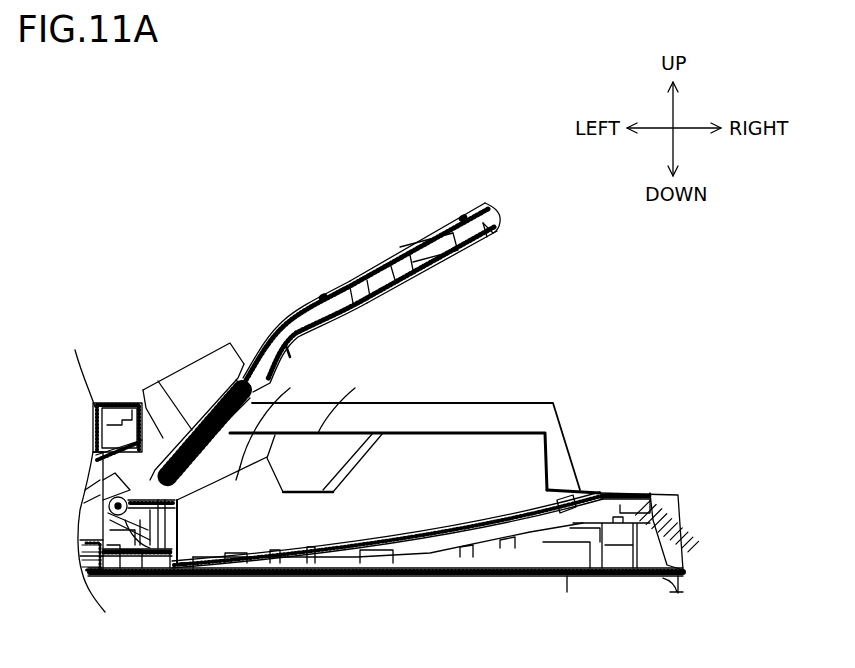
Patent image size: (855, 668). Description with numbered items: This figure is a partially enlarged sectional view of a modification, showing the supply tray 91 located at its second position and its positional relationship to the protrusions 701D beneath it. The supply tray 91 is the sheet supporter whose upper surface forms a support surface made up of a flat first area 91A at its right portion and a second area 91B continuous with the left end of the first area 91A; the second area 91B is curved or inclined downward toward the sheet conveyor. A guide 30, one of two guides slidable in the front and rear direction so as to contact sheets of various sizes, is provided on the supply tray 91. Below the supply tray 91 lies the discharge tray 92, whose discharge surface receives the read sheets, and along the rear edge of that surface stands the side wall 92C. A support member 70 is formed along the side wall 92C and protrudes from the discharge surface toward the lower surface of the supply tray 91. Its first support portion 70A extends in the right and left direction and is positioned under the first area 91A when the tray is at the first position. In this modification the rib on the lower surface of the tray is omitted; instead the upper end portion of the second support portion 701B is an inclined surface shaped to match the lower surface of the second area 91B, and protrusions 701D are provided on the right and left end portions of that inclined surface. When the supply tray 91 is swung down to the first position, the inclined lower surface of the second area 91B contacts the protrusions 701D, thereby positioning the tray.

The guide 30 is at (186, 378).
The support member 70 is at (426, 449).
The first support portion 70A is at (457, 447).
The second support portion 701B is at (258, 466).
The protrusion 701D is at (156, 384).
The supply tray 91 is at (370, 253).
The first area 91A is at (360, 270).
The second area 91B is at (280, 330).
The discharge tray 92 is at (527, 504).
The side wall 92C is at (490, 420).